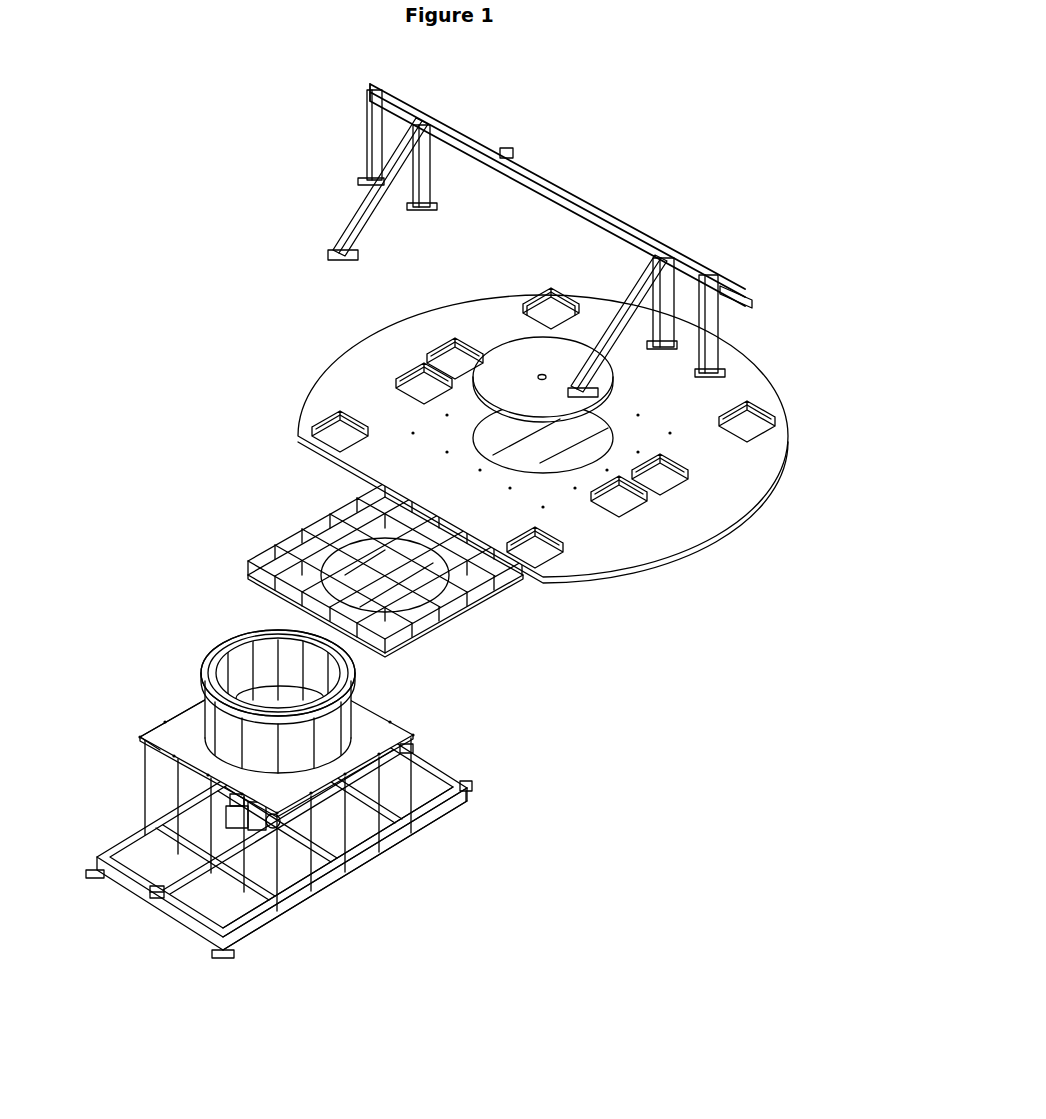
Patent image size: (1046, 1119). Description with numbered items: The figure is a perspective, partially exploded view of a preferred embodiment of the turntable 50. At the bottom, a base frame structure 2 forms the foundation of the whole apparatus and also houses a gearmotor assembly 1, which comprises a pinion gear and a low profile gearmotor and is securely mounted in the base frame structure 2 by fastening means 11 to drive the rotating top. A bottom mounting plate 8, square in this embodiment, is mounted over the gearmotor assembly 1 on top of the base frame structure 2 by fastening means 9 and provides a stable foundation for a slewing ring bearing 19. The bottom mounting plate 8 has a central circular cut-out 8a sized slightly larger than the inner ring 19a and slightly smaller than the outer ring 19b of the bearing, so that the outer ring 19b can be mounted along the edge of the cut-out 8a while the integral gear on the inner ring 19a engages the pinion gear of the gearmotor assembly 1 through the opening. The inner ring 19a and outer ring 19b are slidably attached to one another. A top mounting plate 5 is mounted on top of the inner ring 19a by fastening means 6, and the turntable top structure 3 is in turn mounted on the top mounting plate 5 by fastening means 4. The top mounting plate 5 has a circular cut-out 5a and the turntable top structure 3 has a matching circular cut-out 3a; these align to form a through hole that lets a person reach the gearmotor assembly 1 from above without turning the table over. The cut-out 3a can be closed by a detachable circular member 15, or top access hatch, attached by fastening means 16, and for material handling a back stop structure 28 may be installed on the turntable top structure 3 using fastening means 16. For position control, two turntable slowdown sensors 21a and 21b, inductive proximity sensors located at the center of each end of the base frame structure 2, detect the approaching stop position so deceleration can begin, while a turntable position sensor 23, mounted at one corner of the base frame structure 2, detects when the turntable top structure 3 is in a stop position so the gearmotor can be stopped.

The gearmotor assembly 1 is at (320, 872).
The base frame structure 2 is at (363, 875).
The turntable top structure 3 is at (622, 538).
The circular cut-out 3a is at (568, 432).
The fastening means 4 is at (413, 433).
The top mounting plate 5 is at (262, 558).
The circular cut-out 5a is at (293, 532).
The fastening means 6 is at (322, 527).
The bottom mounting plate 8 is at (177, 725).
The circular cut-out 8a is at (223, 735).
The fastening means 9 is at (180, 715).
The fastening means 11 is at (257, 850).
The detachable circular member 15 is at (510, 375).
The fastening means 16 is at (518, 337).
The slewing ring bearing 19 is at (217, 643).
The inner ring 19a is at (357, 670).
The outer ring 19b is at (343, 700).
The turntable slowdown sensor 21a is at (160, 895).
The turntable slowdown sensor 21b is at (413, 749).
The turntable position sensor 23 is at (470, 790).
The back stop structure 28 is at (630, 226).
The turntable 50 is at (756, 902).